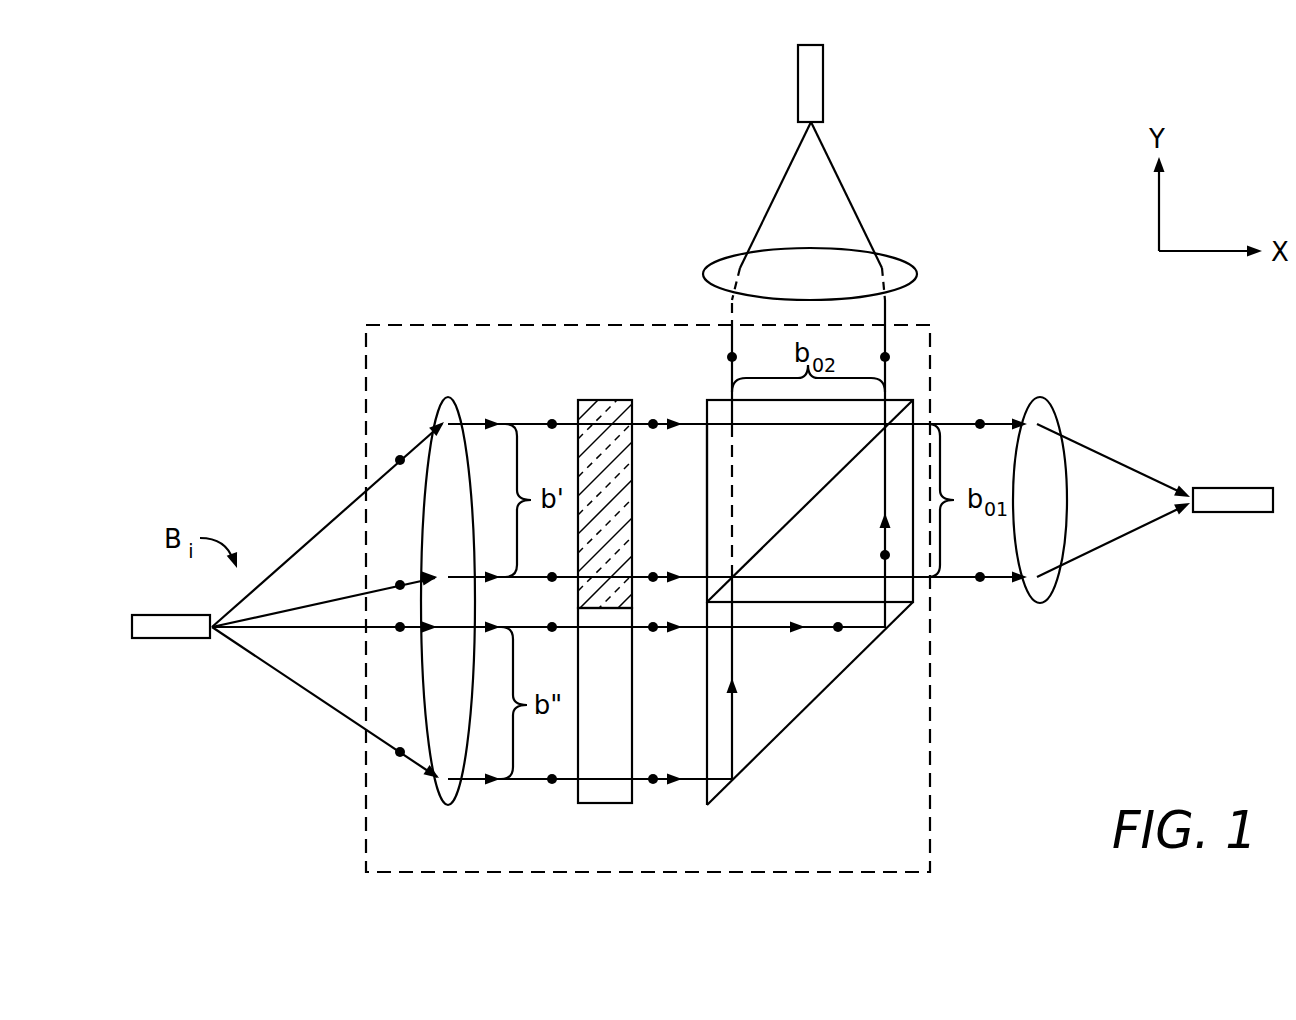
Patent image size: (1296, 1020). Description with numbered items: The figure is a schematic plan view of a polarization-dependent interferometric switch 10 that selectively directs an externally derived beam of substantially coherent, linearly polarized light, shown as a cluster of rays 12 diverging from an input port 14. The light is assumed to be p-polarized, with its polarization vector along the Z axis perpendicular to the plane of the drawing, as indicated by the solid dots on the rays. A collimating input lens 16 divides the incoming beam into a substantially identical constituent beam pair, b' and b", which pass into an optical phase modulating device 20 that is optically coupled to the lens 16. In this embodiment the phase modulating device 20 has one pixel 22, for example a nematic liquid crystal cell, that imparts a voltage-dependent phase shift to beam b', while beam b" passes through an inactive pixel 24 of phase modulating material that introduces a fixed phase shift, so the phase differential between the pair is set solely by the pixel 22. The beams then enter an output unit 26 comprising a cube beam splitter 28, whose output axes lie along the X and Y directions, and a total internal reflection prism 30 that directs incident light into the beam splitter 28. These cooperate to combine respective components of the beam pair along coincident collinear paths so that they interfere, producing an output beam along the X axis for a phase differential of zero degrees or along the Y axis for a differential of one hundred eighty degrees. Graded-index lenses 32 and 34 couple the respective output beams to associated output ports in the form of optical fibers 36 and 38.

The polarization-dependent interferometric switch 10 is at (928, 797).
The incident light beam 12 is at (302, 690).
The input port 14 is at (170, 627).
The collimating input lens 16 is at (452, 400).
The optical phase modulating device 20 is at (605, 815).
The pixel 22 is at (620, 533).
The inactive pixel 24 is at (618, 736).
The output unit 26 is at (810, 732).
The cube beam splitter 28 is at (723, 486).
The total internal reflection prism 30 is at (755, 745).
The graded-index lens 32 is at (905, 270).
The graded-index lens 34 is at (1043, 403).
The optical fiber 36 is at (815, 72).
The optical fiber 38 is at (1240, 497).